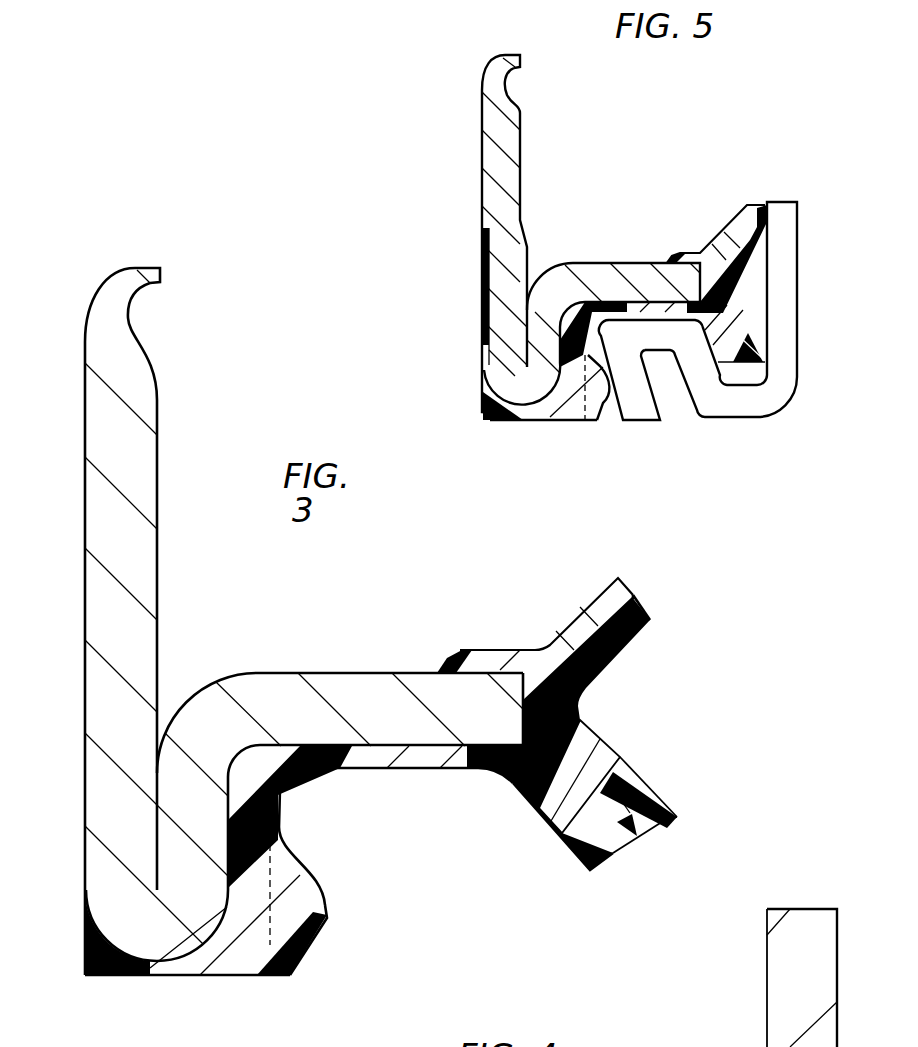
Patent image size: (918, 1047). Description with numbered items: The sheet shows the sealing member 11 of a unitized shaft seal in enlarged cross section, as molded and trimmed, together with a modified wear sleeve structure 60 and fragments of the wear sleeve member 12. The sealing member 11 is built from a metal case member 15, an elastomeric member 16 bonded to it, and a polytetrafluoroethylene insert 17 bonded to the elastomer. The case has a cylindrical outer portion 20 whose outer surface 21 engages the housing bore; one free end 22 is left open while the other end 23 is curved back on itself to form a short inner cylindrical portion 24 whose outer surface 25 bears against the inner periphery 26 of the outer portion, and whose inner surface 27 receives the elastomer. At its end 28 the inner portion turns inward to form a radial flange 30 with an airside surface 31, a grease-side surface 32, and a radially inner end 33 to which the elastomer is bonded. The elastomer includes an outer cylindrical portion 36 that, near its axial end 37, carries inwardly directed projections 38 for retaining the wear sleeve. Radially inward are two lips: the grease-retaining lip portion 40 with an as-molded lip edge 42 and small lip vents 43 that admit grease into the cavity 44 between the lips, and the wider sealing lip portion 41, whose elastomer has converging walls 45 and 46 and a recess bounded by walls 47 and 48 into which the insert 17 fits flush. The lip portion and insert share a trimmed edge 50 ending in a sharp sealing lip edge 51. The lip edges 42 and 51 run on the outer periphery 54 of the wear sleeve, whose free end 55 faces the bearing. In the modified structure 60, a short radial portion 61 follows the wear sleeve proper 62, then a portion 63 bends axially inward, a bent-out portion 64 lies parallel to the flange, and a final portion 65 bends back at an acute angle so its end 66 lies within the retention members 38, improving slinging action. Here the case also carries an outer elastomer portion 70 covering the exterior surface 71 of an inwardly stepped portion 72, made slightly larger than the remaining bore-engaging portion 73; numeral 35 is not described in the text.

In FIG. 3, the sealing member 11 is at (207, 995).
In FIG. 4, the wear sleeve member 12 is at (652, 1046).
In FIG. 3, the metal case member 15 is at (230, 355).
In FIG. 3, the elastomeric member 16 is at (503, 632).
In FIG. 3, the polytetrafluoroethylene insert 17 is at (650, 792).
In FIG. 3, the cylindrical outer portion 20 is at (158, 480).
In FIG. 3, the outer surface 21 is at (85, 436).
In FIG. 3, the free end 22 is at (130, 268).
In FIG. 3, the curved end 23 is at (165, 940).
In FIG. 3, the inner cylindrical portion 24 is at (212, 832).
In FIG. 3, the outer surface of inner cylindrical portion 25 is at (155, 828).
In FIG. 3, the inner periphery 26 is at (160, 630).
In FIG. 3, the inner surface 27 is at (226, 855).
In FIG. 3, the curved end 28 is at (178, 710).
In FIG. 3, the radial flange 30 is at (322, 690).
In FIG. 3, the airside surface 31 is at (433, 770).
In FIG. 3, the grease-side surface 32 is at (370, 690).
In FIG. 3, the radially inner end 33 is at (523, 680).
In FIG. 3, the bond layer 35 is at (393, 770).
In FIG. 3, the outer cylindrical portion 36 is at (280, 838).
In FIG. 3, the axial end 37 is at (228, 975).
In FIG. 5, the axial end 37 is at (548, 421).
In FIG. 3, the inwardly directed projections 38 is at (325, 913).
In FIG. 5, the inwardly directed projections 38 is at (605, 414).
In FIG. 3, the grease-retaining lip portion 40 is at (586, 616).
In FIG. 3, the sealing lip portion 41 is at (540, 820).
In FIG. 3, the lip edge 42 is at (650, 620).
In FIG. 5, the lip edge 42 is at (772, 218).
In FIG. 3, the lip vents 43 is at (633, 593).
In FIG. 3, the cavity 44 is at (595, 705).
In FIG. 5, the cavity 44 is at (760, 280).
In FIG. 3, the converging wall 45 is at (605, 757).
In FIG. 3, the converging wall 46 is at (598, 862).
In FIG. 3, the recess wall 47 is at (640, 777).
In FIG. 3, the recess wall 48 is at (642, 840).
In FIG. 3, the trimmed edge 50 is at (655, 826).
In FIG. 3, the sealing lip edge 51 is at (677, 817).
In FIG. 5, the sealing lip edge 51 is at (778, 394).
In FIG. 4, the outer periphery 54 is at (767, 1040).
In FIG. 4, the free end 55 is at (787, 909).
In FIG. 5, the wear sleeve structure 60 is at (812, 363).
In FIG. 5, the radial portion 61 is at (753, 410).
In FIG. 5, the wear sleeve proper 62 is at (790, 316).
In FIG. 5, the inwardly bent portion 63 is at (697, 378).
In FIG. 5, the bent-out portion 64 is at (652, 332).
In FIG. 5, the final portion 65 is at (630, 385).
In FIG. 5, the end 66 is at (680, 405).
In FIG. 5, the outer portion of elastomer 70 is at (483, 372).
In FIG. 5, the exterior surface 71 is at (489, 300).
In FIG. 5, the inwardly stepped portion 72 is at (482, 228).
In FIG. 5, the remaining portion 73 is at (487, 97).